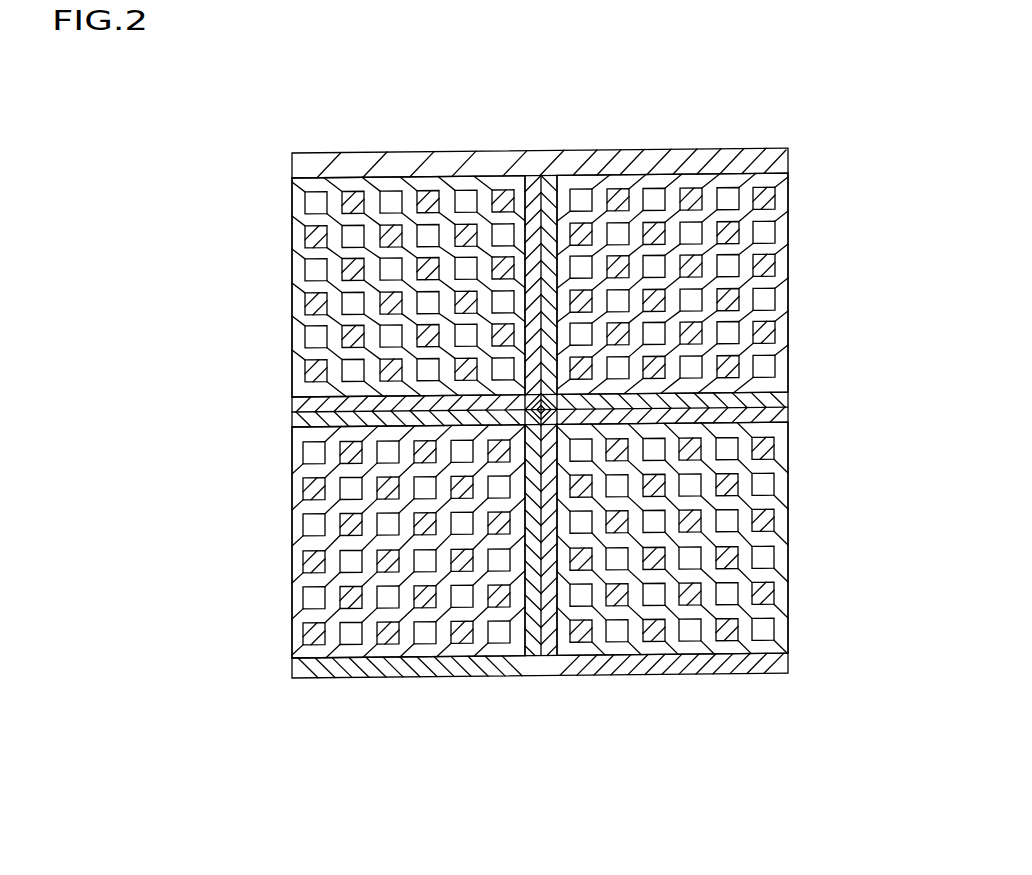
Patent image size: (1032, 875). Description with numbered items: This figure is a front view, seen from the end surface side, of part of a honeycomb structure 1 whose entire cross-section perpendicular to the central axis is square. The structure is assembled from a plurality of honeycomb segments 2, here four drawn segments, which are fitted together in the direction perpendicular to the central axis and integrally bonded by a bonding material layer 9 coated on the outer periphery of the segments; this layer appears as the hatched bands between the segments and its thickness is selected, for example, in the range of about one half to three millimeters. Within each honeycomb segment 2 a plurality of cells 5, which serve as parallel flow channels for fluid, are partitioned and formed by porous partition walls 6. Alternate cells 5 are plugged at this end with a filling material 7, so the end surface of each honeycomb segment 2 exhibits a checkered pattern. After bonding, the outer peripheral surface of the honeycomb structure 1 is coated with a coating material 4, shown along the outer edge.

The honeycomb structure 1 is at (438, 100).
The honeycomb segment 2 is at (278, 260).
The coating material 4 is at (628, 160).
The cell 5 is at (395, 204).
The partition wall 6 is at (447, 203).
The filling material 7 is at (352, 200).
The bonding material layer 9 is at (563, 183).